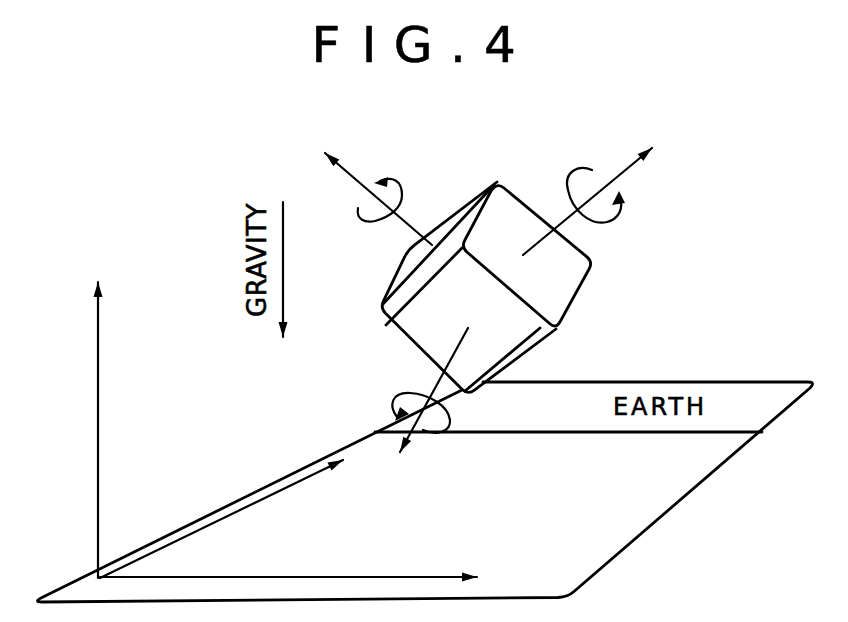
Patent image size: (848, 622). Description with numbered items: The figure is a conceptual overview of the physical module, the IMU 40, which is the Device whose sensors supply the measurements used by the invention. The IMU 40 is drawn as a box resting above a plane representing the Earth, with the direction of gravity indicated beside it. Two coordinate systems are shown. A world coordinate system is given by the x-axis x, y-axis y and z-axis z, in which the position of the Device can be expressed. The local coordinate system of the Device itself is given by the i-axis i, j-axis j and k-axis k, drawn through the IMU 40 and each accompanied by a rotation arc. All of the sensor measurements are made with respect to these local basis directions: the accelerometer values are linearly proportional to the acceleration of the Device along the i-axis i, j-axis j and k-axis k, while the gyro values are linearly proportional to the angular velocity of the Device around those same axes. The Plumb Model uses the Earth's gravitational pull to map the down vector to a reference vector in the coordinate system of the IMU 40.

The IMU 40 is at (505, 189).
The x-axis x is at (298, 578).
The y-axis y is at (231, 511).
The z-axis z is at (96, 417).
The i-axis i is at (417, 400).
The j-axis j is at (598, 193).
The k-axis k is at (362, 185).